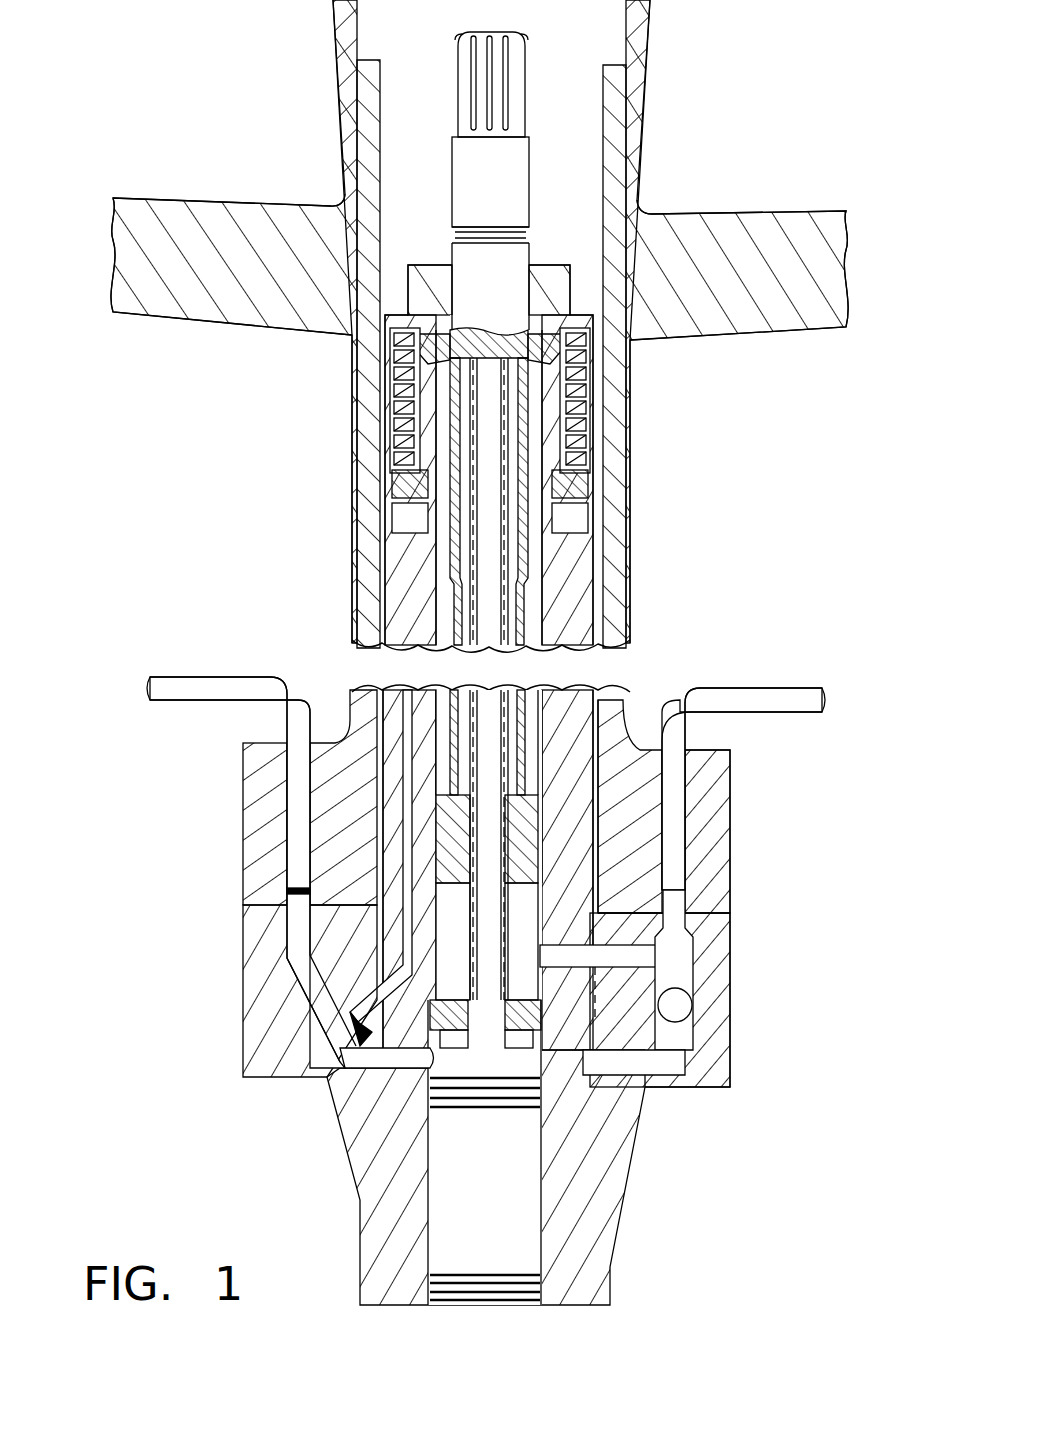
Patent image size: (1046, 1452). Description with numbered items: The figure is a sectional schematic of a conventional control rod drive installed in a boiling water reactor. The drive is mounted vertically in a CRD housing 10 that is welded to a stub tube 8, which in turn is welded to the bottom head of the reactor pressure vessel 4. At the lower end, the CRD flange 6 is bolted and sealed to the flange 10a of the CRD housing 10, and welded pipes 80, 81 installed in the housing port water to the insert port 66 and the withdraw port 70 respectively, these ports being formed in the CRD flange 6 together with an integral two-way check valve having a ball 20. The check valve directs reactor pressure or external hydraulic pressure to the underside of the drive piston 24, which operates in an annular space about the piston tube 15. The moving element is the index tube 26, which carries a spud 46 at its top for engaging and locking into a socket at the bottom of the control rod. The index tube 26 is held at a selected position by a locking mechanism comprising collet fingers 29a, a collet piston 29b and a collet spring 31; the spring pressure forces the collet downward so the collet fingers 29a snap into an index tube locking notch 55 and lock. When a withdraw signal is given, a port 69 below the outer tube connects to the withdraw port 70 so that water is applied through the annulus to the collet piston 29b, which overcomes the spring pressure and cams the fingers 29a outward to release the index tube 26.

The reactor pressure vessel 4 is at (262, 205).
The stub tube 8 is at (650, 115).
The spud 46 is at (527, 47).
The collet spring 31 is at (395, 435).
The collet fingers 29a is at (590, 375).
The collet piston 29b is at (395, 490).
The piston tube 15 is at (505, 575).
The index tube 26 is at (530, 610).
The CRD housing 10 is at (360, 590).
The hydraulic system line / welded pipe 81 is at (197, 677).
The hydraulic system line / welded pipe 80 is at (770, 688).
The index tube locking notch 55 is at (548, 690).
The drive piston 24 is at (600, 848).
The flange of the CRD housing 10a is at (725, 875).
The withdraw port 70 is at (300, 912).
The insert port 66 is at (690, 905).
The ball 20 is at (685, 1000).
The port 69 is at (345, 1060).
The CRD flange 6 is at (611, 1245).